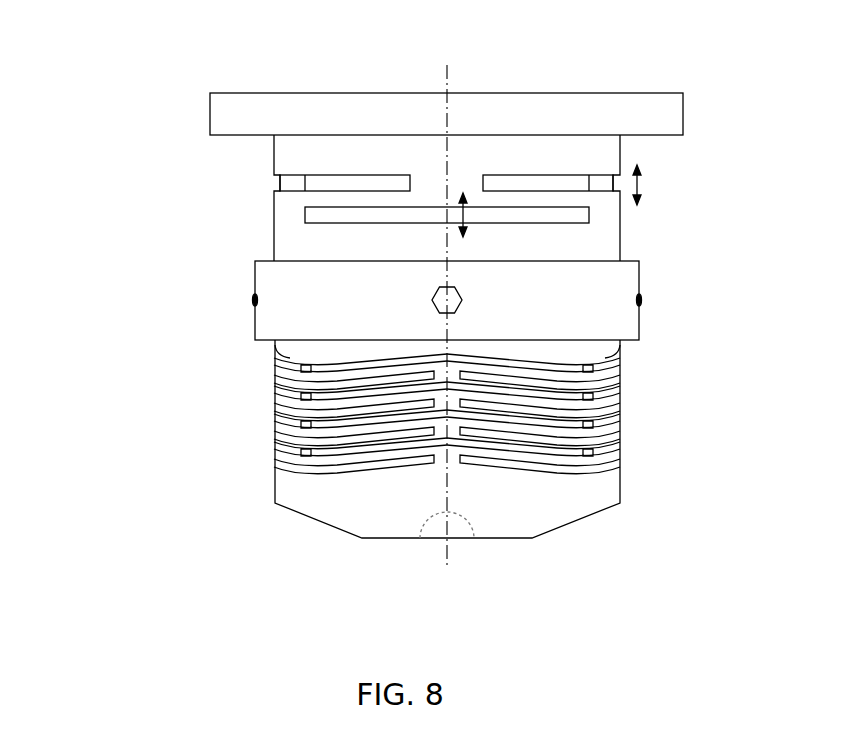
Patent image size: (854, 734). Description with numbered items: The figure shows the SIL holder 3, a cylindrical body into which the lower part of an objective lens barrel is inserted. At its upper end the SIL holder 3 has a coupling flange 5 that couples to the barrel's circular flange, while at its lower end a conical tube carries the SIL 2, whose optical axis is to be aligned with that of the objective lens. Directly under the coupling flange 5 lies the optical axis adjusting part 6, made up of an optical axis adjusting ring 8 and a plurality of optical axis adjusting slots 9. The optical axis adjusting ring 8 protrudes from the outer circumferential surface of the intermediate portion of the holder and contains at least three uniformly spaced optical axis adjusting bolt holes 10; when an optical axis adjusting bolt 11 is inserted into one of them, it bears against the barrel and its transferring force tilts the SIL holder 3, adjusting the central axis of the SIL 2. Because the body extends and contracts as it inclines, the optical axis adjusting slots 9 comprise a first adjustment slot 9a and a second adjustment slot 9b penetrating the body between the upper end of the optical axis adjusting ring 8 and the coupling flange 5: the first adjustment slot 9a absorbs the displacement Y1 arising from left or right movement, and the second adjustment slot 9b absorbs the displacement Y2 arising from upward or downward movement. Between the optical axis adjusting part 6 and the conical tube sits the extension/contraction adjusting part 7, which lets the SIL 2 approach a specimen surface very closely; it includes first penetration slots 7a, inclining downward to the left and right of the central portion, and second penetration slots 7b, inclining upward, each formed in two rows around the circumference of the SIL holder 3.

The SIL 2 is at (457, 530).
The SIL holder 3 is at (528, 368).
The coupling flange 5 is at (643, 110).
The optical axis adjusting part 6 is at (328, 229).
The extension/contraction adjusting part 7 is at (528, 436).
The first penetration slot 7a is at (585, 398).
The second penetration slot 7b is at (567, 437).
The optical axis adjusting ring 8 is at (305, 280).
The optical axis adjusting slot 9 is at (342, 171).
The first adjustment slot 9a is at (328, 183).
The second adjustment slot 9b is at (318, 212).
The optical axis adjusting bolt hole 10 is at (255, 303).
The optical axis adjusting bolt 11 is at (449, 300).
The displacement Y1 is at (657, 185).
The displacement Y2 is at (484, 215).